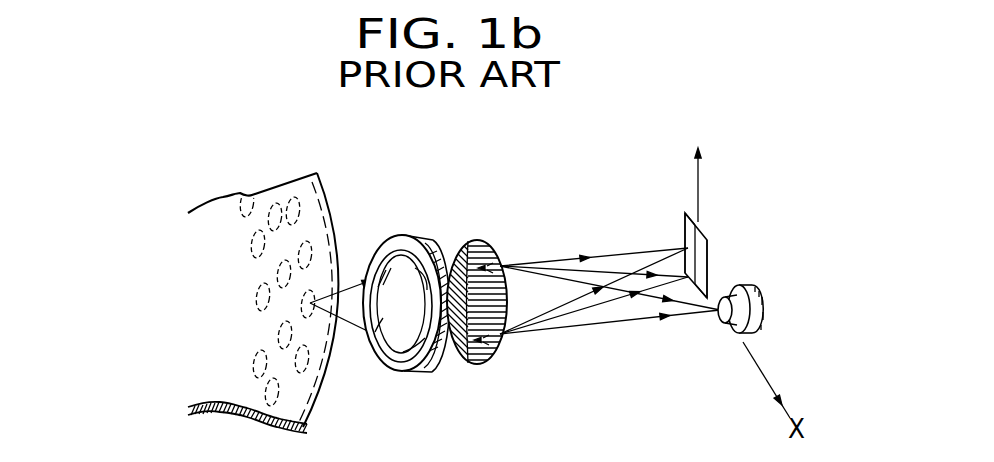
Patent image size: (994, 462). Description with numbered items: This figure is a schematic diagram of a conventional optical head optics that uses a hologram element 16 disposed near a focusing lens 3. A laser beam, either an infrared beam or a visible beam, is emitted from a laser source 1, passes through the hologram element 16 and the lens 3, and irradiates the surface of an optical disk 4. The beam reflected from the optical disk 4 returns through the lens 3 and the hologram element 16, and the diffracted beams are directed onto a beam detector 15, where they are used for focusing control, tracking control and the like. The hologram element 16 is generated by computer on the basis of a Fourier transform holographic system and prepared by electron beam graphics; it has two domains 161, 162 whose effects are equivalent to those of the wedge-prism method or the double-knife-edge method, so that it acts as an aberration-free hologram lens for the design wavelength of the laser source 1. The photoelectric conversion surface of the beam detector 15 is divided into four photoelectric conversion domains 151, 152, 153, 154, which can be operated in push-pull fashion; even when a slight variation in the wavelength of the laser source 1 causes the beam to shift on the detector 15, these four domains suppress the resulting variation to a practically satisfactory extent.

The laser source 1 is at (765, 307).
The focusing lens 3 is at (408, 372).
The optical disk 4 is at (281, 195).
The beam detector 15 is at (704, 223).
The hologram element 16 is at (450, 306).
The photoelectric conversion domain 151 is at (703, 257).
The photoelectric conversion domain 152 is at (687, 230).
The photoelectric conversion domain 153 is at (685, 258).
The photoelectric conversion domain 154 is at (710, 287).
The hologram domain 161 is at (478, 278).
The hologram domain 162 is at (482, 250).